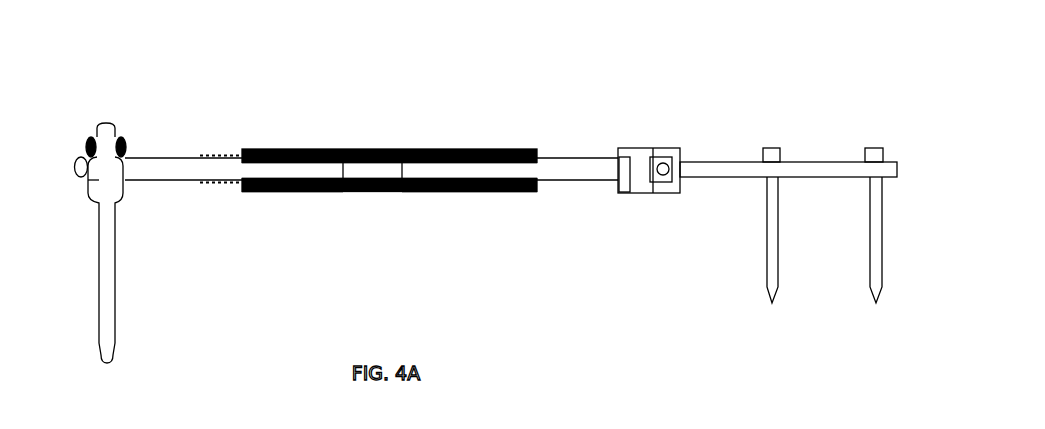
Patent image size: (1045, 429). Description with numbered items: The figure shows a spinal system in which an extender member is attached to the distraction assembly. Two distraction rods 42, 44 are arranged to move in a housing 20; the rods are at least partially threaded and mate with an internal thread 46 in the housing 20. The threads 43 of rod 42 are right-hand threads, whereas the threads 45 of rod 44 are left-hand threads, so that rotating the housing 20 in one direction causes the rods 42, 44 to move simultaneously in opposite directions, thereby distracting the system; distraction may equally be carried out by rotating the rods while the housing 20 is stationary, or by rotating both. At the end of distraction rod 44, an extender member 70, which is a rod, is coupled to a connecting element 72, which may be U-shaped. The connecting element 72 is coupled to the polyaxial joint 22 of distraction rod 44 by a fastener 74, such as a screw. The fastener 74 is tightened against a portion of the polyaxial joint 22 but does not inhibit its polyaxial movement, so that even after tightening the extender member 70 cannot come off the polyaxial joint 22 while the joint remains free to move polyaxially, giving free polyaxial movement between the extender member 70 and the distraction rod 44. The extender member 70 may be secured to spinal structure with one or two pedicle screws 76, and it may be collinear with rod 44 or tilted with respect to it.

The housing 20 is at (377, 147).
The polyaxial joint 22 is at (625, 175).
The distraction rod 42 is at (192, 150).
The threads 43 is at (290, 180).
The distraction rod 44 is at (585, 147).
The threads 45 is at (475, 183).
The internal thread 46 is at (318, 187).
The extender member 70 is at (745, 167).
The connecting element 72 is at (662, 192).
The fastener 74 is at (643, 150).
The pedicle screws 76 is at (872, 242).